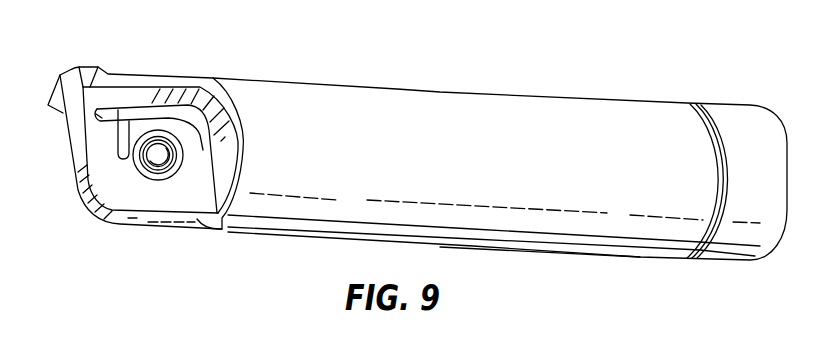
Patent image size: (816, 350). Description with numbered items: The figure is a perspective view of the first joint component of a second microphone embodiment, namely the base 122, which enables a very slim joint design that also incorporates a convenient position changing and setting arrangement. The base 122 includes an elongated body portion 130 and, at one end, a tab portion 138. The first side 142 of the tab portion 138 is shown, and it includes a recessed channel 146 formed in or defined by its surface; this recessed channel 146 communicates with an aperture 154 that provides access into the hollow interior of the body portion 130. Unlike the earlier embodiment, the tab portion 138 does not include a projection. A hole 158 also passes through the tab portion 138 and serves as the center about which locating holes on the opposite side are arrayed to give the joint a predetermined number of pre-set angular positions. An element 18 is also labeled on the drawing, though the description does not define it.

The band 18 is at (125, 113).
The cylindrical body 122 is at (530, 92).
The lower surface of body 130 is at (593, 227).
The head 138 is at (115, 173).
The tab 142 is at (190, 188).
The lug 146 is at (117, 137).
The hatched seal band 154 is at (202, 84).
The boss opening 158 is at (140, 173).